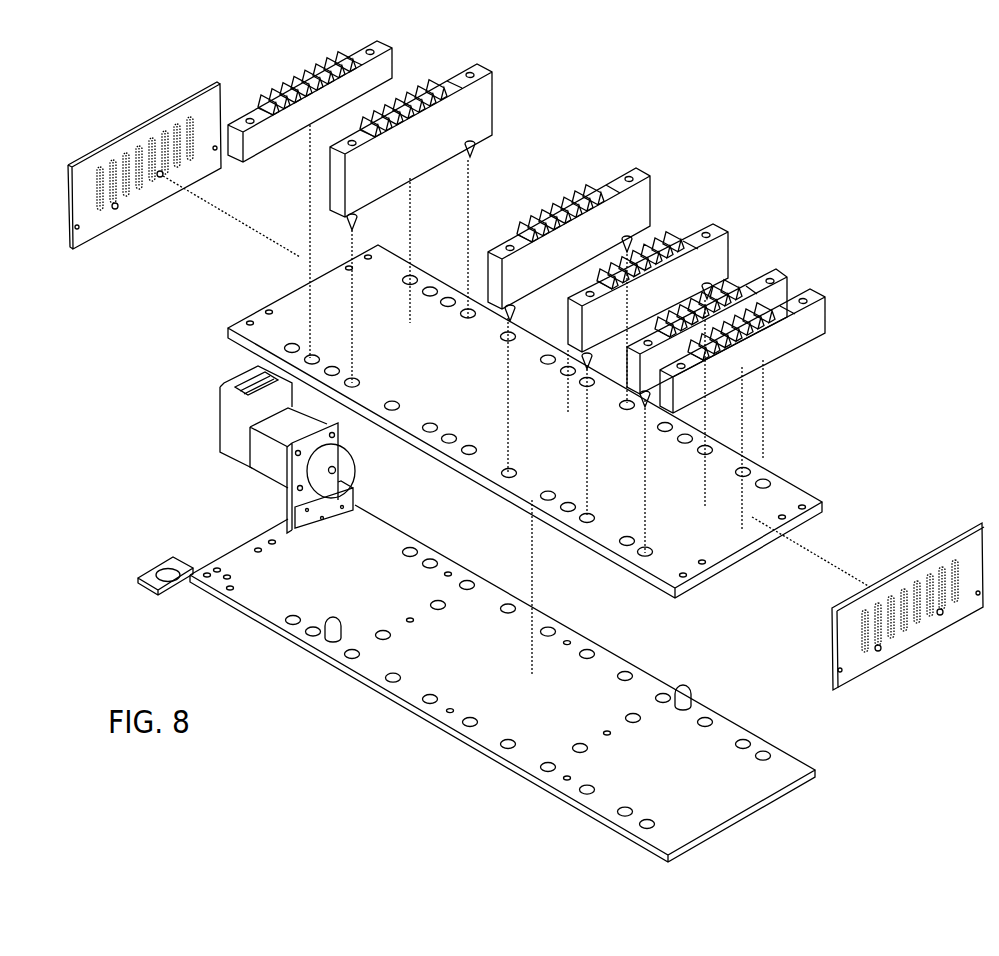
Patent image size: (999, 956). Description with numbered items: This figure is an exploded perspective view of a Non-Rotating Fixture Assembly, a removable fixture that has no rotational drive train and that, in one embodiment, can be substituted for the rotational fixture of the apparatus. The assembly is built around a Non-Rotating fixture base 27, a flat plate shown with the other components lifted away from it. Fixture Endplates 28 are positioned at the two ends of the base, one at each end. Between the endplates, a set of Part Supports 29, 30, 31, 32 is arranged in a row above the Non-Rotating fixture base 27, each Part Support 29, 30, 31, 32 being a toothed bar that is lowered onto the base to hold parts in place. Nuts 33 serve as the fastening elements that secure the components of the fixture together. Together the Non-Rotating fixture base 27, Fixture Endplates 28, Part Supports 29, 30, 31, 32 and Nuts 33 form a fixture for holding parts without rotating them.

The Non-Rotating fixture base 27 is at (503, 497).
The Fixture Endplates 28 is at (135, 128).
The Part Support 29 is at (390, 50).
The Part Support 30 is at (783, 263).
The Part Support 31 is at (714, 224).
The Part Support 32 is at (637, 165).
The Nuts 33 is at (483, 63).